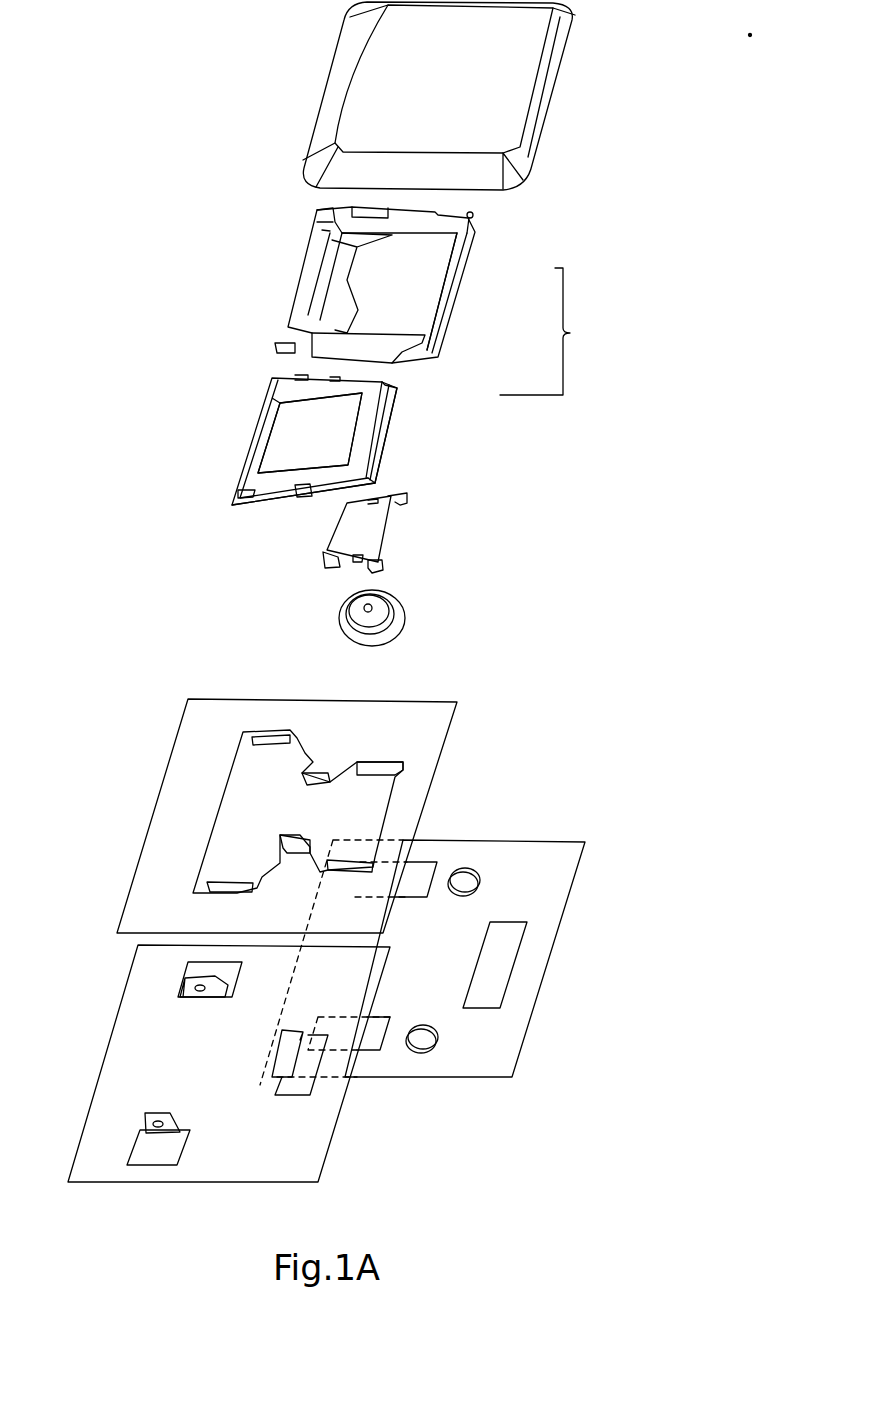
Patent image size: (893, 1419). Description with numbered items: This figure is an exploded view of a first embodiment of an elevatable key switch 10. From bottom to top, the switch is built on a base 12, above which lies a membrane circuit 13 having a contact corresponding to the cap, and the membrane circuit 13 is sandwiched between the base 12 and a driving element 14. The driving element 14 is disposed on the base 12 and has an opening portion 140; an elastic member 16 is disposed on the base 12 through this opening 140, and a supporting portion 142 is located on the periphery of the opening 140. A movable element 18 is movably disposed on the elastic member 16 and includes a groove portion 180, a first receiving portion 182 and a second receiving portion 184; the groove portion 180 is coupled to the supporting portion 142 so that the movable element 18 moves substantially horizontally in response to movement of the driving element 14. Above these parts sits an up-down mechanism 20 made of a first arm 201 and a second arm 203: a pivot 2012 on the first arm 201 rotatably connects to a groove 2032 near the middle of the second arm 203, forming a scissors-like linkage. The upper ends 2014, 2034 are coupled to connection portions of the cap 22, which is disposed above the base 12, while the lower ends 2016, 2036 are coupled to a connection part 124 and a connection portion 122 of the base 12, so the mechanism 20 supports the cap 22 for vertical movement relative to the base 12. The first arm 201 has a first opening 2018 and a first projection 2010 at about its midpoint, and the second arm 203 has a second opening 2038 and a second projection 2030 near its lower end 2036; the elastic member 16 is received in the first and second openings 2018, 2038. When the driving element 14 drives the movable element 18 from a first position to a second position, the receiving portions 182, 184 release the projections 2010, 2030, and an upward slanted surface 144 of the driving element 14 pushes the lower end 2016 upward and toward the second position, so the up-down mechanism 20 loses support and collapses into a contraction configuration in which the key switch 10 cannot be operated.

The elevatable key switch 10 is at (673, 305).
The base 12 is at (215, 1091).
The connection portion 122 is at (185, 982).
The connection part 124 is at (288, 1068).
The membrane circuit 13 is at (547, 905).
The driving element 14 is at (303, 785).
The opening portion 140 is at (268, 767).
The supporting portion 142 is at (282, 835).
The upward slanted surface 144 is at (363, 768).
The elastic member 16 is at (397, 605).
The movable element 18 is at (347, 544).
The groove portion 180 is at (352, 562).
The first receiving portion 182 is at (393, 497).
The second receiving portion 184 is at (330, 560).
The up-down mechanism 20 is at (557, 331).
The first arm 201 is at (325, 465).
The first projection 2010 is at (283, 495).
The pivot 2012 is at (307, 497).
The upper end 2014 is at (250, 492).
The lower end 2016 is at (390, 433).
The first opening 2018 is at (283, 450).
The second arm 203 is at (382, 285).
The second projection 2030 is at (315, 252).
The groove 2032 is at (392, 240).
The upper end 2034 is at (474, 217).
The lower end 2036 is at (275, 347).
The second opening 2038 is at (413, 310).
The cap 22 is at (552, 110).